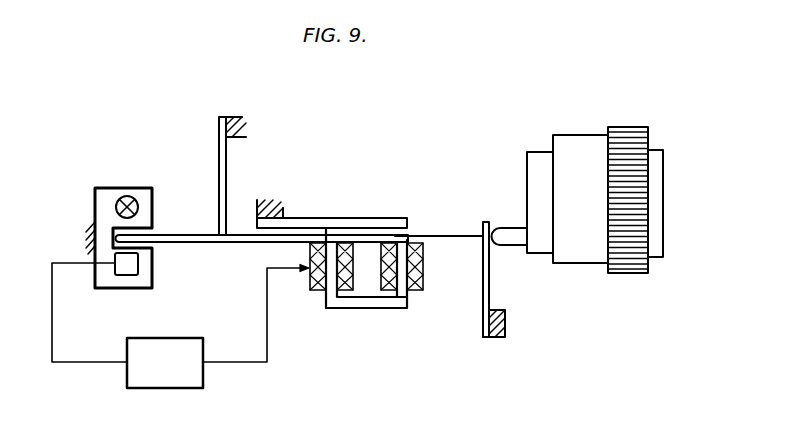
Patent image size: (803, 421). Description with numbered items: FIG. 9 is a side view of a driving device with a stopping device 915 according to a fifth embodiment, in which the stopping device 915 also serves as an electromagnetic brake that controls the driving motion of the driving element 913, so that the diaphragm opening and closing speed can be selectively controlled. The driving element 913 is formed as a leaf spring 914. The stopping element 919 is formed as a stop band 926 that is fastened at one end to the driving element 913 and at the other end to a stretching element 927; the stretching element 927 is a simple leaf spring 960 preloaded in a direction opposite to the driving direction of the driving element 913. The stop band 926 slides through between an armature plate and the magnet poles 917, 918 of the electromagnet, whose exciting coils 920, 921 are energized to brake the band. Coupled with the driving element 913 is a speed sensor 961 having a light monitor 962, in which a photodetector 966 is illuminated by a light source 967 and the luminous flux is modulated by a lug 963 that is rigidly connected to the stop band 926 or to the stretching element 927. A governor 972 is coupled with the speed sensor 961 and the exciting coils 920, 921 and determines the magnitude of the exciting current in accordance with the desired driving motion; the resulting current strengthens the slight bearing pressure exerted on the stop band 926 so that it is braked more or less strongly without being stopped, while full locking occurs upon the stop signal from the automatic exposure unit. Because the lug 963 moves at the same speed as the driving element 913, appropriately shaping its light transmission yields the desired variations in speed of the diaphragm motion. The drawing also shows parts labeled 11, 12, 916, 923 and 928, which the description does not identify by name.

The motor 11 is at (662, 168).
The motor shaft 12 is at (515, 228).
The driving element 913 is at (494, 291).
The leaf spring 914 is at (492, 262).
The stopping device 915 is at (346, 316).
The core yoke portion 916 is at (403, 298).
The magnet pole 917 is at (415, 240).
The magnet pole 918 is at (327, 242).
The stopping element 919 is at (466, 230).
The exciting coil 920 is at (381, 289).
The exciting coil 921 is at (353, 288).
The fixed mounting plate 923 is at (306, 218).
The stop band 926 is at (428, 232).
The stretching element 927 is at (232, 162).
The support column surface 928 is at (217, 180).
The leaf spring 960 is at (219, 143).
The speed sensor 961 is at (126, 188).
The light monitor 962 is at (93, 197).
The lug 963 is at (114, 238).
The photodetector 966 is at (125, 272).
The light source 967 is at (138, 206).
The governor 972 is at (180, 325).